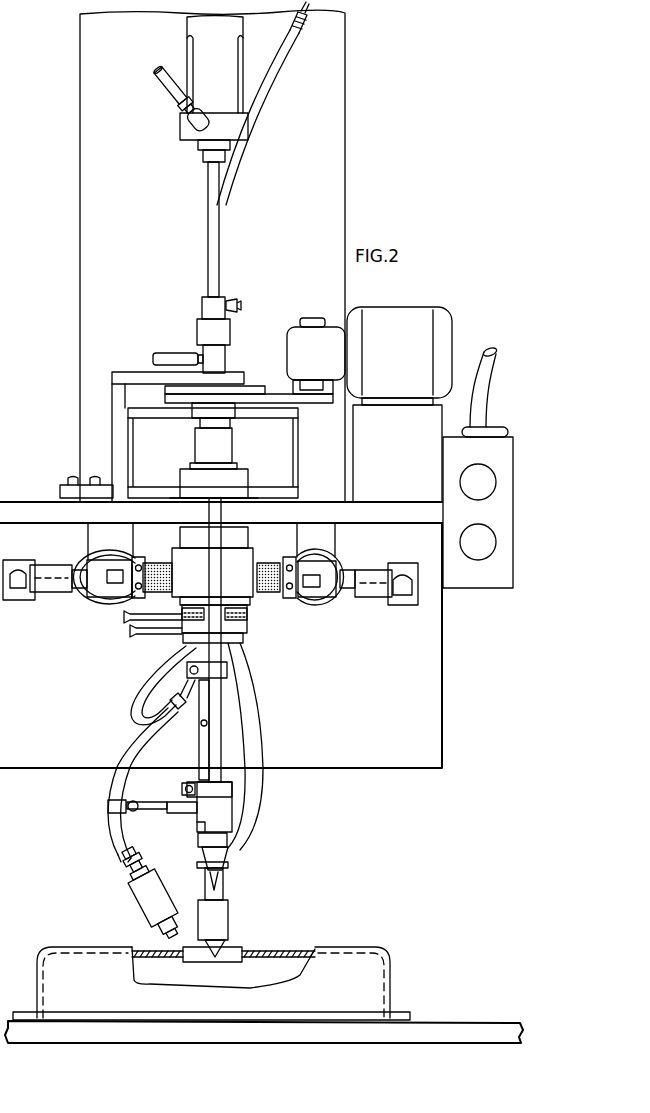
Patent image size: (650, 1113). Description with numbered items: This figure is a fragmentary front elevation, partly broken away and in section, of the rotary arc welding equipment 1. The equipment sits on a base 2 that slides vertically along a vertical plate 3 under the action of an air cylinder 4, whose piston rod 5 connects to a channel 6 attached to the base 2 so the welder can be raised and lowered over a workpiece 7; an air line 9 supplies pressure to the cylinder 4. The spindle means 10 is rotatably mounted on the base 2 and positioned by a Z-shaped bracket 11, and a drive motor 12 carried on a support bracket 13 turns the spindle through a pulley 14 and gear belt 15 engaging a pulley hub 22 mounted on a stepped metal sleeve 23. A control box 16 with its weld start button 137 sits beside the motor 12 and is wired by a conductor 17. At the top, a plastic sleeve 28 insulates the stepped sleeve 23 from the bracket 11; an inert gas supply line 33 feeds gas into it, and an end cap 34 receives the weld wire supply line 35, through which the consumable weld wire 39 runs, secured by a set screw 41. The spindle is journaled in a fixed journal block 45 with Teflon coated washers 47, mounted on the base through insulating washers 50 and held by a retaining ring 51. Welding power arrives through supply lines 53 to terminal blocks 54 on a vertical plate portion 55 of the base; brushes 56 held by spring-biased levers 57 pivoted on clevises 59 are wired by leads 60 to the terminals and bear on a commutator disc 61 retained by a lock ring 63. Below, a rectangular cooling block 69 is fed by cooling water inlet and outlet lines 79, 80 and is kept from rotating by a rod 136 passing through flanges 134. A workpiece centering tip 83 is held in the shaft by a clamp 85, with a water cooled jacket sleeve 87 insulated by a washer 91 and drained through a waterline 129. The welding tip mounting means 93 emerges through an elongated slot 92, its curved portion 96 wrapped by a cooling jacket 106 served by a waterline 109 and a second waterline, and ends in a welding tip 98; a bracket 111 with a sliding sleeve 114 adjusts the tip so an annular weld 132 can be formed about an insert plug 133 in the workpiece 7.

The rotary arc welding equipment 1 is at (360, 220).
The base 2 is at (30, 500).
The vertical plate 3 is at (310, 130).
The air cylinder 4 is at (203, 30).
The piston rod 5 is at (208, 178).
The channel 6 is at (135, 426).
The workpiece 7 is at (231, 980).
The air line 9 is at (170, 82).
The spindle means 10 is at (229, 742).
The Z-shaped bracket 11 is at (118, 385).
The drive motor 12 is at (400, 325).
The support bracket 13 is at (384, 452).
The pulley 14 is at (326, 404).
The gear belt 15 is at (271, 394).
The control box 16 is at (480, 578).
The conductor 17 is at (484, 372).
The pulley hub 22 is at (180, 406).
The stepped metal sleeve 23 is at (192, 447).
The plastic sleeve 28 is at (215, 360).
The inert gas supply line 33 is at (180, 356).
The end cap 34 is at (210, 305).
The weld wire supply line 35 is at (248, 93).
The weld wire 39 is at (308, 28).
The set screw 41 is at (240, 304).
The journal block 45 is at (234, 481).
The Teflon coated washer 47 is at (233, 456).
The insulating washer 50 is at (248, 497).
The retaining ring 51 is at (190, 540).
The supply line 53 is at (403, 575).
The terminal block 54 is at (47, 592).
The vertical plate portion 55 is at (392, 720).
The brush 56 is at (160, 596).
The spring-biased lever 57 is at (110, 570).
The clevis 59 is at (97, 593).
The electrical supply lead 60 is at (92, 556).
The commutator disc 61 is at (260, 601).
The lock ring 63 is at (246, 562).
The cooling block 69 is at (246, 622).
The cooling water inlet line 79 is at (130, 617).
The cooling water outlet line 80 is at (150, 631).
The workpiece centering tip 83 is at (229, 925).
The clamp 85 is at (228, 845).
The water cooled jacket sleeve 87 is at (224, 878).
The insulating washer 91 is at (229, 864).
The elongated slot 92 is at (213, 714).
The welding tip mounting means 93 is at (108, 792).
The curved portion 96 is at (118, 840).
The welding tip 98 is at (136, 892).
The cooling jacket 106 is at (122, 752).
The waterline 109 is at (136, 713).
The bracket 111 is at (180, 805).
The sleeve 114 is at (215, 812).
The waterline 129 is at (258, 775).
The annular weld 132 is at (244, 952).
The insert plug 133 is at (217, 962).
The flange 134 is at (192, 641).
The rod 136 is at (217, 590).
The weld start button 137 is at (482, 480).